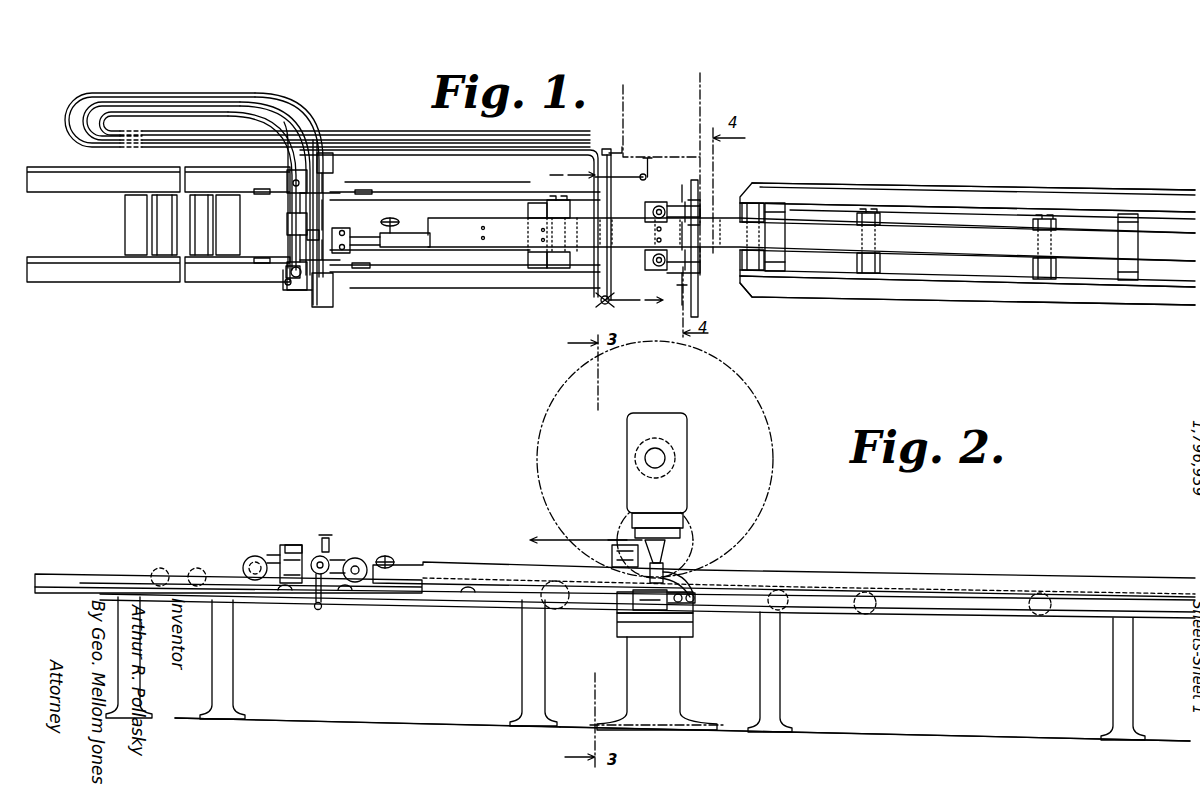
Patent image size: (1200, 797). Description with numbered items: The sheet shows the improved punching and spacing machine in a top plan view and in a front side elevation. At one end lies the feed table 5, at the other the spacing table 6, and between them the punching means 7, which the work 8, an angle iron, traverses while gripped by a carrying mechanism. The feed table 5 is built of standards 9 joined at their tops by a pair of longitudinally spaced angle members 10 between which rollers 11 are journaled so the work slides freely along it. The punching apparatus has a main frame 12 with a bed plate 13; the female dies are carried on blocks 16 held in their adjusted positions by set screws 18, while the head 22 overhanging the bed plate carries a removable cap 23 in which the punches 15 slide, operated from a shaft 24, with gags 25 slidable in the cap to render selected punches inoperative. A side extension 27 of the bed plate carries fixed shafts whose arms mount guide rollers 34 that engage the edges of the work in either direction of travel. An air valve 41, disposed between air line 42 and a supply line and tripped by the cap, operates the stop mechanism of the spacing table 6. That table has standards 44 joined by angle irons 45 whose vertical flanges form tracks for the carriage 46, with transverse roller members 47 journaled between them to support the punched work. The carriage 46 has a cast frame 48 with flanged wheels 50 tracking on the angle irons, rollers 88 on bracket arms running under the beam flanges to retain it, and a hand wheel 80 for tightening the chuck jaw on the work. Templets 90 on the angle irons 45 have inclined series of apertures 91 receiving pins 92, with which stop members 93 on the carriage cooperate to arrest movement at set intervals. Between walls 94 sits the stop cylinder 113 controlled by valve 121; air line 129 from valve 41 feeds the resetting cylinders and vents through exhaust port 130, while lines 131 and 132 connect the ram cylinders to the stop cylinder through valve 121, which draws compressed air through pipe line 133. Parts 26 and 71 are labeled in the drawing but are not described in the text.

In FIG. 1, the feed table 5 is at (1056, 150).
In FIG. 2, the feed table 5 is at (1040, 692).
In FIG. 1, the spacing table 6 is at (360, 100).
In FIG. 2, the spacing table 6 is at (402, 688).
In FIG. 1, the punching means 7 is at (657, 120).
In FIG. 2, the punching means 7 is at (782, 508).
In FIG. 1, the work 8 is at (1008, 245).
In FIG. 2, the work 8 is at (1131, 569).
In FIG. 1, the standards 9 is at (786, 218).
In FIG. 2, the standards 9 is at (775, 684).
In FIG. 1, the angle members 10 is at (995, 168).
In FIG. 2, the angle members 10 is at (1085, 618).
In FIG. 1, the rollers 11 is at (755, 205).
In FIG. 2, the rollers 11 is at (768, 592).
In FIG. 2, the main frame 12 is at (679, 683).
In FIG. 1, the bed plate 13 is at (692, 185).
In FIG. 2, the bed plate 13 is at (692, 606).
In FIG. 2, the punches 15 is at (663, 563).
In FIG. 2, the blocks or slides 16 is at (655, 605).
In FIG. 2, the set screws 18 is at (636, 598).
In FIG. 1, the head 22 is at (703, 86).
In FIG. 2, the head 22 is at (708, 462).
In FIG. 2, the removable cap 23 is at (675, 520).
In FIG. 2, the shaft 24 is at (652, 458).
In FIG. 2, the gags 25 is at (683, 527).
In FIG. 2, the clamp 26 is at (684, 536).
In FIG. 2, the side extension 27 is at (680, 614).
In FIG. 1, the guide rollers 34 is at (660, 274).
In FIG. 2, the guide rollers 34 is at (700, 578).
In FIG. 1, the air valve 41 is at (660, 178).
In FIG. 2, the air valve 41 is at (598, 555).
In FIG. 1, the air line 42 is at (605, 150).
In FIG. 1, the standards 44 is at (128, 225).
In FIG. 2, the standards 44 is at (240, 610).
In FIG. 1, the angle irons 45 is at (43, 256).
In FIG. 2, the angle irons 45 is at (43, 568).
In FIG. 1, the carriage 46 is at (342, 278).
In FIG. 2, the carriage 46 is at (286, 530).
In FIG. 1, the roller members 47 is at (160, 243).
In FIG. 2, the roller members 47 is at (197, 568).
In FIG. 2, the cast frame 48 is at (282, 552).
In FIG. 1, the flanged wheels 50 is at (278, 190).
In FIG. 2, the flanged wheels 50 is at (246, 563).
In FIG. 1, the feed bar 71 is at (441, 236).
In FIG. 2, the feed bar 71 is at (405, 582).
In FIG. 1, the hand wheel 80 is at (398, 218).
In FIG. 2, the hand wheel 80 is at (392, 560).
In FIG. 2, the rollers 88 is at (318, 608).
In FIG. 1, the templets 90 is at (700, 210).
In FIG. 1, the apertures 91 is at (692, 195).
In FIG. 2, the stops or pins 92 is at (282, 592).
In FIG. 2, the stop members 93 is at (292, 596).
In FIG. 1, the walls 94 is at (659, 205).
In FIG. 1, the cylinder 113 is at (592, 176).
In FIG. 1, the valve 121 is at (608, 308).
In FIG. 1, the air line 129 is at (284, 122).
In FIG. 2, the exhaust port 130 is at (610, 552).
In FIG. 1, the line 131 is at (305, 292).
In FIG. 1, the line 132 is at (333, 190).
In FIG. 1, the pipe line 133 is at (626, 306).